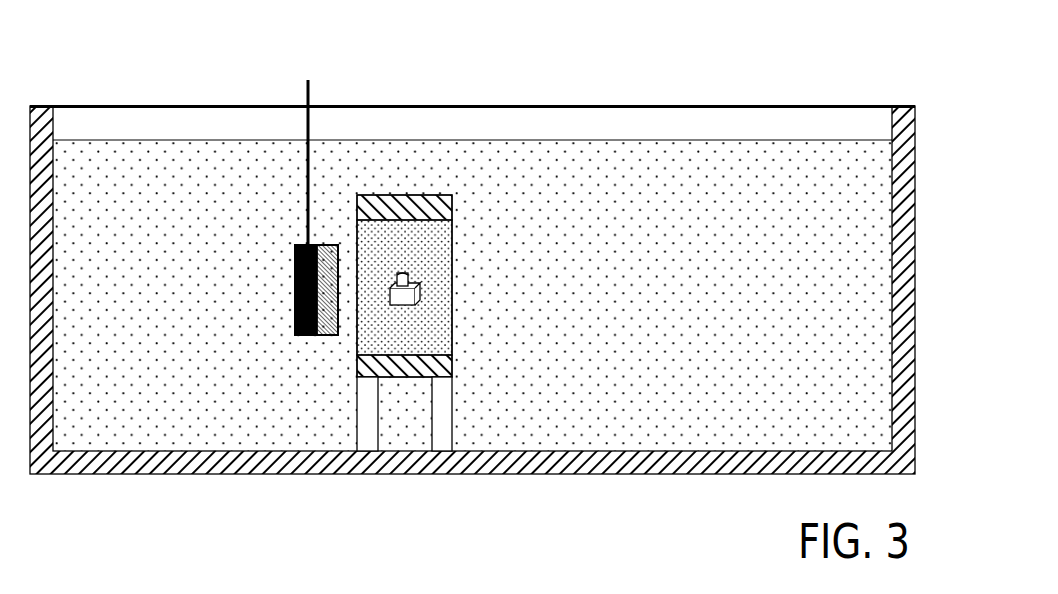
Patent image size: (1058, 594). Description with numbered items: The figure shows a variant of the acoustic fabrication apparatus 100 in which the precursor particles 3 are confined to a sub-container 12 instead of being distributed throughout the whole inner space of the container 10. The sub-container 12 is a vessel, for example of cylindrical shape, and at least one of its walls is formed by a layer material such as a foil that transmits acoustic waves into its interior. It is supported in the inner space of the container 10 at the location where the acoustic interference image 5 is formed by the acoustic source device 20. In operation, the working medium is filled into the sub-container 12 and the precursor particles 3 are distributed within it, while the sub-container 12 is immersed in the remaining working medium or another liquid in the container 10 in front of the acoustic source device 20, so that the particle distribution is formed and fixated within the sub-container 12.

The acoustic fabrication apparatus 100 is at (472, 237).
The container 10 is at (845, 437).
The acoustic source device 20 is at (292, 70).
The sub-container 12 is at (464, 323).
The acoustic interference image 5 is at (458, 260).
The precursor particles 3 is at (452, 347).